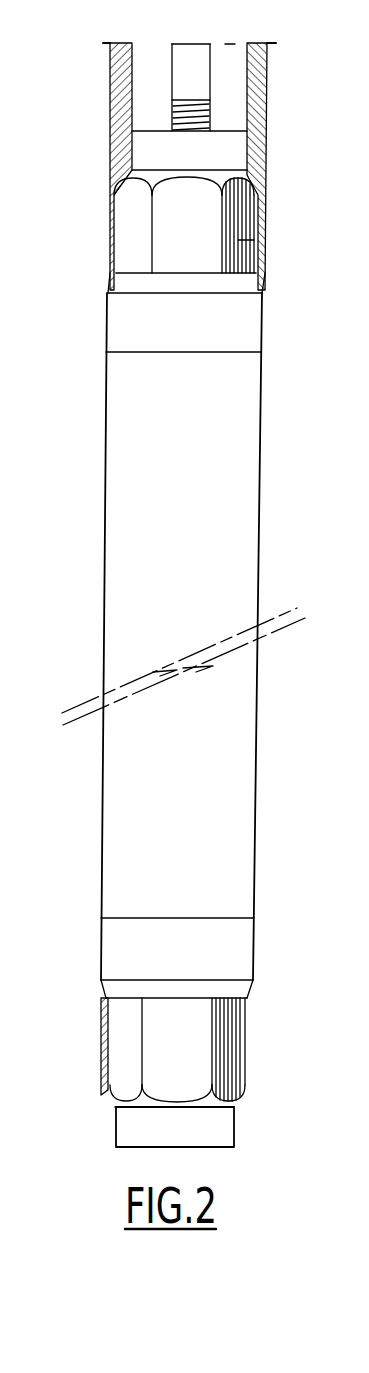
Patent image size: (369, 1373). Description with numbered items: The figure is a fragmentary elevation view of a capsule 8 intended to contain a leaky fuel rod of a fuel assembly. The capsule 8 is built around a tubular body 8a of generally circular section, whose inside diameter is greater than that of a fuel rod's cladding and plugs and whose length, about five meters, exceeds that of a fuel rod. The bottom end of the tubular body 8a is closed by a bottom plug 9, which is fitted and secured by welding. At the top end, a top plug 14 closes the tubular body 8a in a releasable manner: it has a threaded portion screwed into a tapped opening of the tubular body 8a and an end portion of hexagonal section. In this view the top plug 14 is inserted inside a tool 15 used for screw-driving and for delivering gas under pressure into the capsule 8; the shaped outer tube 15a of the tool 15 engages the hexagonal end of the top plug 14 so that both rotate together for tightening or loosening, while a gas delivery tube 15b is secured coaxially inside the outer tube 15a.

The capsule 8 is at (208, 636).
The tubular body 8a is at (237, 723).
The bottom plug 9 is at (230, 955).
The top plug 14 is at (265, 228).
The tool 15 is at (191, 168).
The outer tube 15a is at (111, 124).
The tube for delivering gas 15b is at (172, 58).